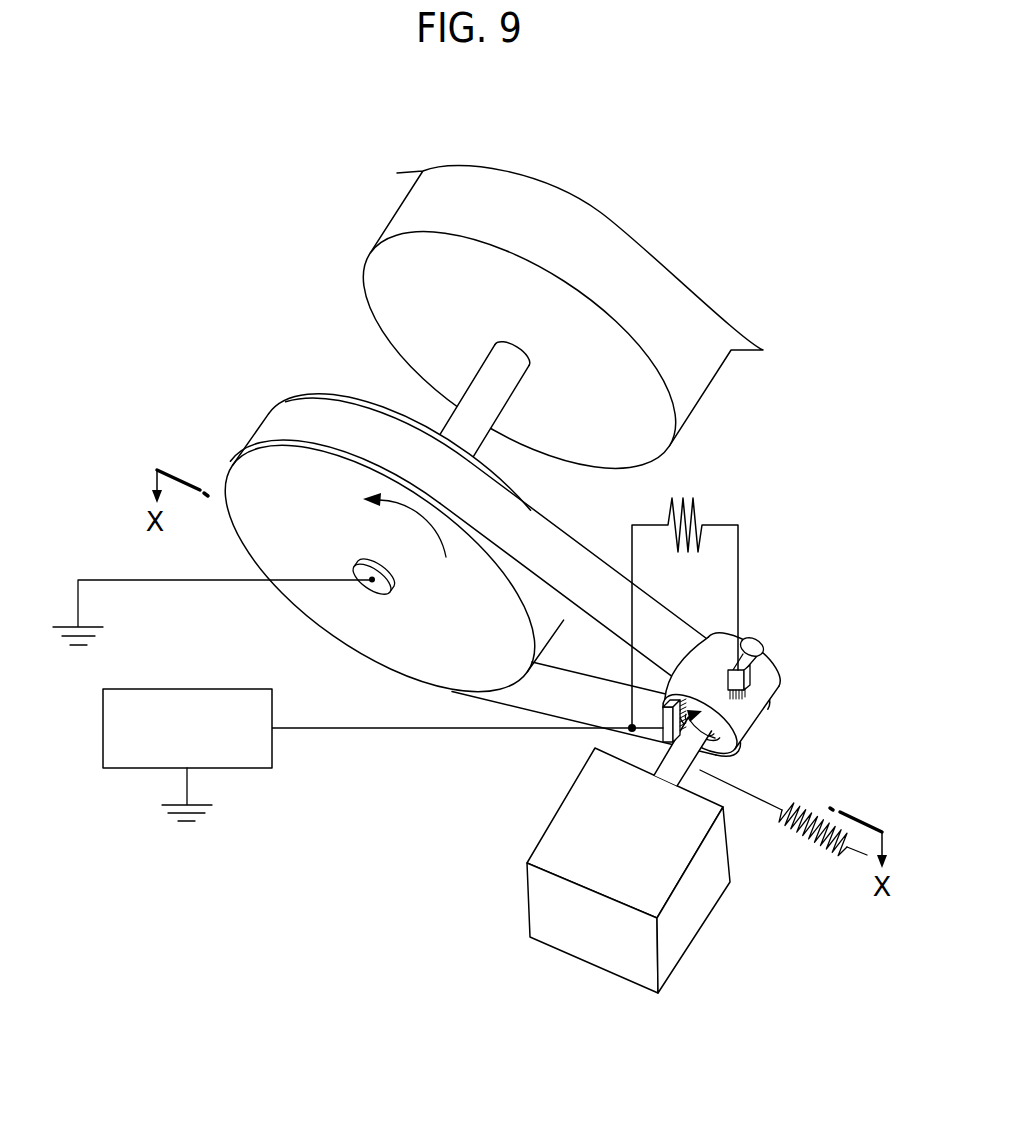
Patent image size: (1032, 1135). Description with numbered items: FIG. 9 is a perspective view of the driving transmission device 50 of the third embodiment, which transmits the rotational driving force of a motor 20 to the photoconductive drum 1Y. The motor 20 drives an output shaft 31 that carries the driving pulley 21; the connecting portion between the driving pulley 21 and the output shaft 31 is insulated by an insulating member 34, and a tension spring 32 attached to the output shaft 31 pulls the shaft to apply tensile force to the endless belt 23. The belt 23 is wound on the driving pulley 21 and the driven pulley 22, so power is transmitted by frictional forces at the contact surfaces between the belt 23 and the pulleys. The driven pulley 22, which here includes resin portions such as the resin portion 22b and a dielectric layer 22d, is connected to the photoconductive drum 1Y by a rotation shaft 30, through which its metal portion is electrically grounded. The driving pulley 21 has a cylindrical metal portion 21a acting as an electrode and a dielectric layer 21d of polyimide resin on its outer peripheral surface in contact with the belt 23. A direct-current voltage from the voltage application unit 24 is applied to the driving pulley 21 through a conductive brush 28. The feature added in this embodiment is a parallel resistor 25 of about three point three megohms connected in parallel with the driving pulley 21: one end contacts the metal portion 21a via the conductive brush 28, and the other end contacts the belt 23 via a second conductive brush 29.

The photoconductive drum 1Y is at (690, 383).
The driving transmission device 50 is at (790, 500).
The driven pulley 22 is at (245, 364).
The resin portion 22b is at (378, 652).
The dielectric layer 22d is at (558, 614).
The rotation shaft 30 is at (448, 422).
The endless belt 23 is at (556, 557).
The driving pulley 21 is at (771, 655).
The cylindrical metal portion 21a is at (730, 752).
The dielectric layer 21d is at (662, 701).
The conductive brush 29 is at (770, 702).
The parallel resistor 25 is at (693, 497).
The voltage application unit 24 is at (188, 689).
The insulating member 34 is at (684, 702).
The output shaft 31 is at (767, 656).
The conductive brush 28 is at (668, 742).
The motor 20 is at (535, 903).
The tension spring 32 is at (822, 848).